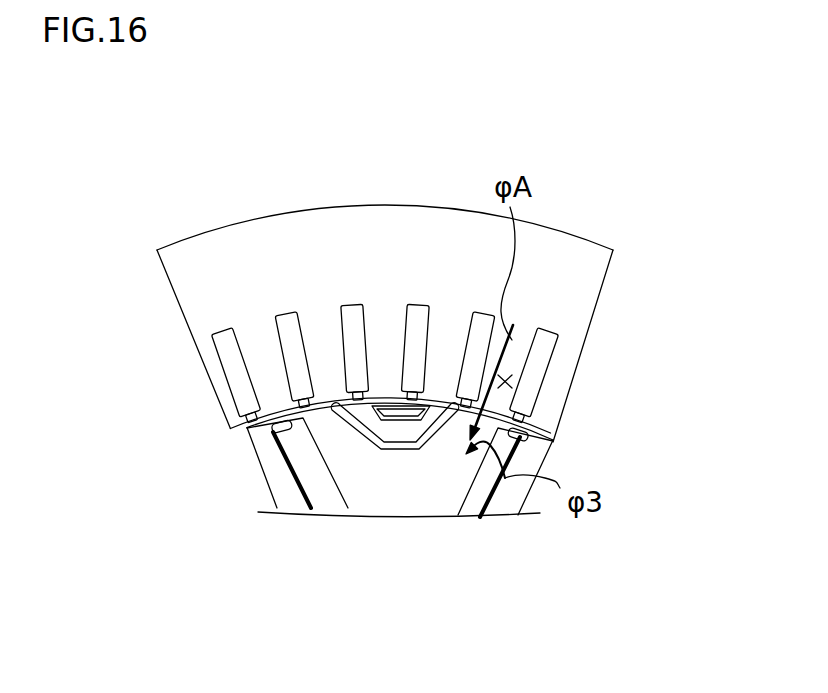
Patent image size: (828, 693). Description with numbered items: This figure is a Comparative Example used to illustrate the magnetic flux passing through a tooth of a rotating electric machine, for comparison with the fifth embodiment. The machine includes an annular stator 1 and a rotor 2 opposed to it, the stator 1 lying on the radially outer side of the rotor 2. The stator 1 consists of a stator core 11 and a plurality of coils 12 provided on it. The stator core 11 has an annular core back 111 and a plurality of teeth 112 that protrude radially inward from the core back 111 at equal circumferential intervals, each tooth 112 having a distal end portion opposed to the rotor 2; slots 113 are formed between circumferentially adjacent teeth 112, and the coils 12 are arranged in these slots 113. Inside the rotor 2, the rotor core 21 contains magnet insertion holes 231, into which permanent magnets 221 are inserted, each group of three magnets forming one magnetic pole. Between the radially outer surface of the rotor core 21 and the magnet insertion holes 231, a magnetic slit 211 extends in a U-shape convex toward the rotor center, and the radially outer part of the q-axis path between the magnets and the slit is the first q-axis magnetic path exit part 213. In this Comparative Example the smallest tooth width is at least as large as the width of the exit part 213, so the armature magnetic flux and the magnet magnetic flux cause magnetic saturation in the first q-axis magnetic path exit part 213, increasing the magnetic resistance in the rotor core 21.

The stator 1 is at (307, 211).
The stator core 11 is at (405, 215).
The coils 12 is at (228, 336).
The core back 111 is at (588, 250).
The teeth 112 is at (523, 343).
The slots 113 is at (523, 388).
The rotor 2 is at (293, 513).
The rotor core 21 is at (387, 511).
The magnetic slit 211 is at (407, 449).
The first q-axis magnetic path exit part 213 is at (495, 437).
The permanent magnets 221 is at (320, 494).
The magnet insertion holes 231 is at (272, 432).